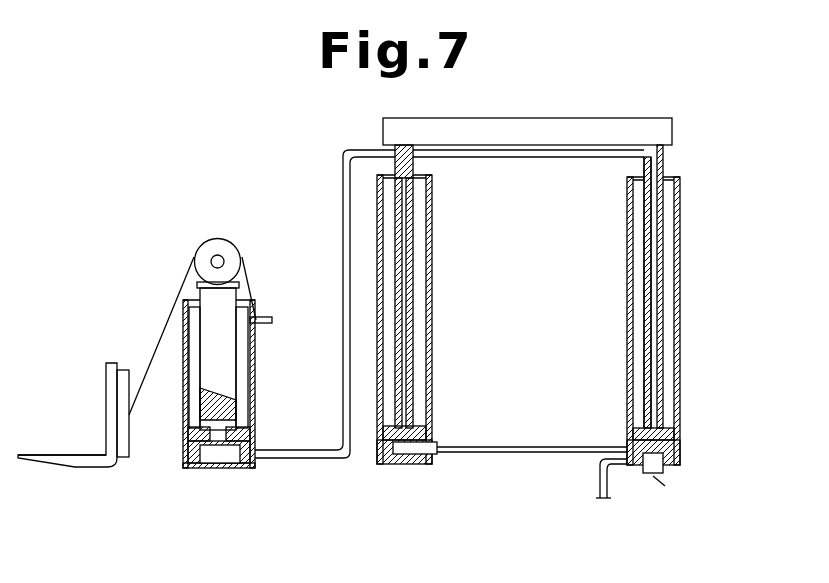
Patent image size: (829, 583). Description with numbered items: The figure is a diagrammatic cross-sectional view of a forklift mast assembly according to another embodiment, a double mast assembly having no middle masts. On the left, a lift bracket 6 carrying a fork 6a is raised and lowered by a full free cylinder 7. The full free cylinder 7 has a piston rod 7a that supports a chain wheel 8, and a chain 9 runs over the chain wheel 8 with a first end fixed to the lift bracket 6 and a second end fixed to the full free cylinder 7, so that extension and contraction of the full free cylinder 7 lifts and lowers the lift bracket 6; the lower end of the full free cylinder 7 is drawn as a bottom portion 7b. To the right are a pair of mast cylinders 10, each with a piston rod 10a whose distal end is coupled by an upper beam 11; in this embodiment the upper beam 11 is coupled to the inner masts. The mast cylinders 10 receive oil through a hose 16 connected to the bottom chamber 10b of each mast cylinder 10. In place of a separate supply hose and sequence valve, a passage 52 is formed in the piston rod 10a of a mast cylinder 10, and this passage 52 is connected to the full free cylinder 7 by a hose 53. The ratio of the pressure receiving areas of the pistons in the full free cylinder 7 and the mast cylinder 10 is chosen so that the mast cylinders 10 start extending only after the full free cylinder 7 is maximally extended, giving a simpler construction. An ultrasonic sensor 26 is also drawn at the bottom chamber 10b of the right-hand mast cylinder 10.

The lift bracket 6 is at (129, 450).
The fork 6a is at (73, 455).
The full free cylinder 7 is at (183, 448).
The piston rod 7a is at (212, 362).
The cylinder bottom plate 7b is at (213, 463).
The chain wheel 8 is at (222, 240).
The chain 9 is at (162, 336).
The mast cylinder 10 is at (432, 284).
The piston rod 10a is at (412, 318).
The bottom chamber 10b is at (387, 465).
The upper beam 11 is at (580, 118).
The hose 16 is at (599, 481).
The ultrasonic sensor 26 is at (645, 475).
The passage 52 is at (653, 220).
The hose 53 is at (343, 232).